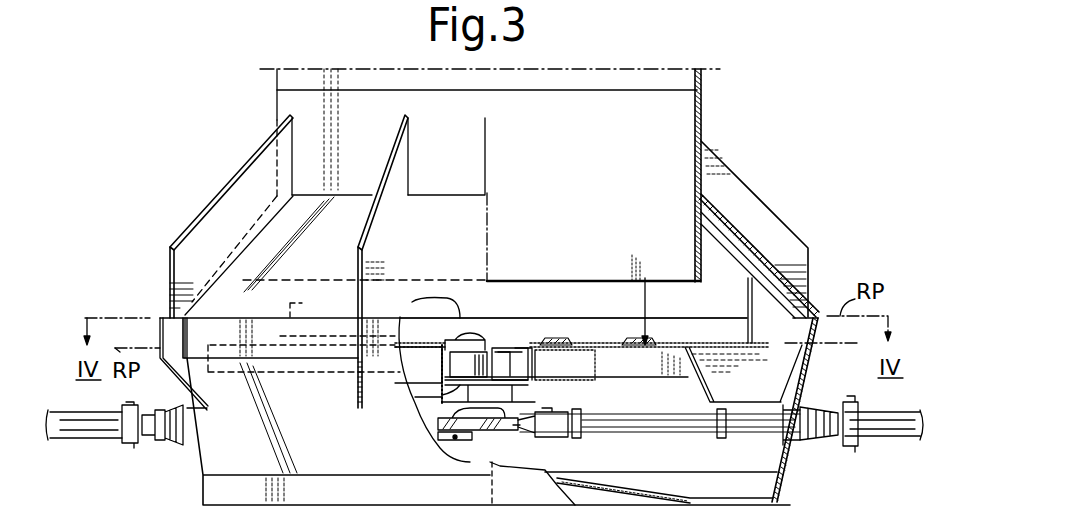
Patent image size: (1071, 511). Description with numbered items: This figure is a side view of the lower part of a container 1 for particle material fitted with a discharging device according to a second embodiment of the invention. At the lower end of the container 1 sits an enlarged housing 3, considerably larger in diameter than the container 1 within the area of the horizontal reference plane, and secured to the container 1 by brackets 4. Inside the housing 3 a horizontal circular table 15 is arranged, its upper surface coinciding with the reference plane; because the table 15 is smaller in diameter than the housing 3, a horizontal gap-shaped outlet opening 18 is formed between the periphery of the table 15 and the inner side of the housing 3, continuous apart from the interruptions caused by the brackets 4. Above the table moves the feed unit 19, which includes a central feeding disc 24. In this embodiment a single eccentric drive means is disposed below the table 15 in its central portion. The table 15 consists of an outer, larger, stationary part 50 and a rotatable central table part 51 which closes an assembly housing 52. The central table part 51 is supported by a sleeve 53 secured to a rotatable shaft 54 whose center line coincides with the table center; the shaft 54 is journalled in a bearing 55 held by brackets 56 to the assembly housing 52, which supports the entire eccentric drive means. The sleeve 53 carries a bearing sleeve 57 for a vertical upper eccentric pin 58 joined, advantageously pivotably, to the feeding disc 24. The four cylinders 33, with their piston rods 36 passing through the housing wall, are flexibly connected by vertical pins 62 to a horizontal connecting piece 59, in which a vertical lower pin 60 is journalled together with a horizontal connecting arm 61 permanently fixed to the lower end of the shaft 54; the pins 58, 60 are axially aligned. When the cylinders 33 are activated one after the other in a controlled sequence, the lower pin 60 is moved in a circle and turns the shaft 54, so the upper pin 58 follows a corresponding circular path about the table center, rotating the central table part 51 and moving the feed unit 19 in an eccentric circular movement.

The container 1 is at (702, 107).
The housing 3 is at (814, 312).
The brackets 4 is at (730, 191).
The table 15 is at (298, 302).
The outlet opening 18 is at (782, 344).
The feed unit 19 is at (650, 300).
The feeding disc 24 is at (493, 343).
The cylinders 33 is at (106, 441).
The piston rods 36 is at (768, 447).
The stationary part 50 is at (685, 344).
The central table part 51 is at (506, 346).
The assembly housing 52 is at (570, 374).
The sleeve 53 is at (524, 346).
The shaft 54 is at (496, 432).
The bearing 55 is at (540, 373).
The brackets 56 is at (435, 384).
The bearing sleeve 57 is at (412, 302).
The eccentric pin 58 is at (458, 333).
The connecting piece 59 is at (490, 449).
The lower pin 60 is at (438, 424).
The connecting arm 61 is at (445, 440).
The vertical pins 62 is at (552, 438).